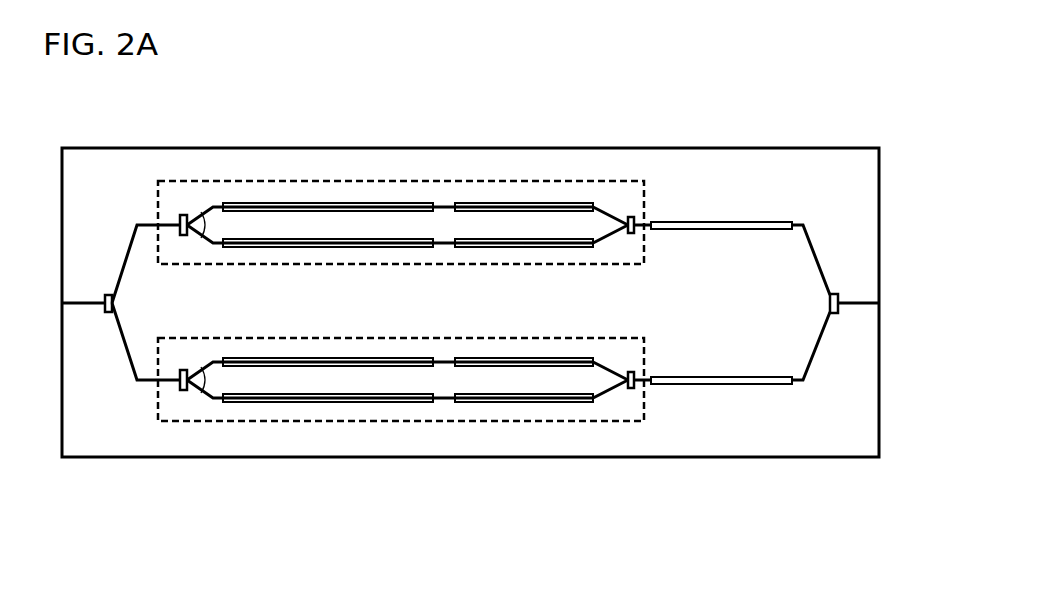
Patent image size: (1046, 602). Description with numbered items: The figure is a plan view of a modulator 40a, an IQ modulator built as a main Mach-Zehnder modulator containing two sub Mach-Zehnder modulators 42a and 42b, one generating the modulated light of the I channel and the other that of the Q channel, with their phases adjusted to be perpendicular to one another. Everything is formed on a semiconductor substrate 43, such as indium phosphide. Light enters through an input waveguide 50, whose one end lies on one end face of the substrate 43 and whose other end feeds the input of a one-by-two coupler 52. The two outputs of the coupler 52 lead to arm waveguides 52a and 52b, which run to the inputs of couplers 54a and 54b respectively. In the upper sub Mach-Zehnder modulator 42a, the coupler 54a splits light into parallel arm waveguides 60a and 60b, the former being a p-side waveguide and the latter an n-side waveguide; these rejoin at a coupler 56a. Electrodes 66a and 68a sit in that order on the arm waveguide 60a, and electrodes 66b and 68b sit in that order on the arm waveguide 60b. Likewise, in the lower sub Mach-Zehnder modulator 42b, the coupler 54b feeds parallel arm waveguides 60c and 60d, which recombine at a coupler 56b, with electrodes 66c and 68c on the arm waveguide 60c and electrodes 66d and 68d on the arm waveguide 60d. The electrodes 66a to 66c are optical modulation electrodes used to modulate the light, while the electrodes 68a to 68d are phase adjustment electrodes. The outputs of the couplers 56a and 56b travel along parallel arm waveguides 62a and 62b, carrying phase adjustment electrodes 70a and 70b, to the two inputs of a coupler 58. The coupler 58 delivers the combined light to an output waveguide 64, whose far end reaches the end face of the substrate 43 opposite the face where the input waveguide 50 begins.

The modulator 40a is at (957, 155).
The sub Mach-Zehnder modulator 42a is at (158, 193).
The sub Mach-Zehnder modulator 42b is at (158, 405).
The substrate 43 is at (874, 423).
The input waveguide 50 is at (82, 300).
The coupler 52 is at (107, 313).
The arm waveguide 52a is at (150, 227).
The arm waveguide 52b is at (150, 378).
The coupler 54a is at (181, 213).
The coupler 54b is at (181, 392).
The coupler 56a is at (627, 217).
The coupler 56b is at (627, 389).
The coupler 58 is at (830, 293).
The arm waveguide 60a is at (213, 208).
The arm waveguide 60b is at (204, 238).
The arm waveguide 60c is at (202, 386).
The arm waveguide 60d is at (218, 397).
The arm waveguide 62a is at (649, 221).
The arm waveguide 62b is at (649, 385).
The output waveguide 64 is at (856, 300).
The electrode 66a is at (380, 206).
The electrode 66b is at (320, 245).
The electrode 66c is at (323, 364).
The electrode 66d is at (383, 402).
The electrode 68a is at (538, 207).
The electrode 68b is at (482, 244).
The electrode 68c is at (482, 364).
The electrode 68d is at (538, 402).
The electrode 70a is at (727, 222).
The electrode 70b is at (727, 385).